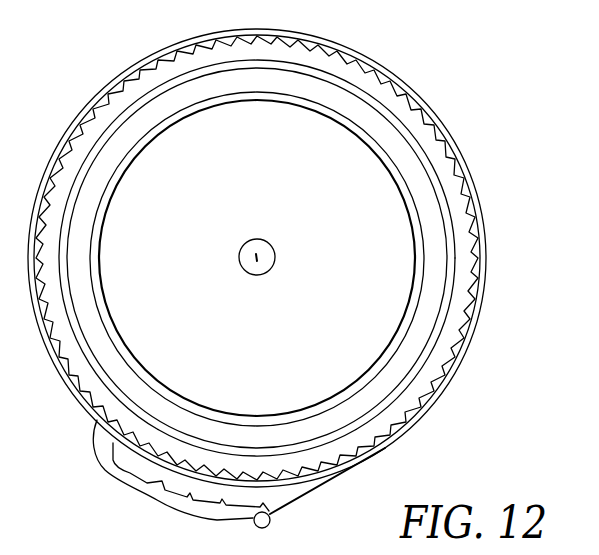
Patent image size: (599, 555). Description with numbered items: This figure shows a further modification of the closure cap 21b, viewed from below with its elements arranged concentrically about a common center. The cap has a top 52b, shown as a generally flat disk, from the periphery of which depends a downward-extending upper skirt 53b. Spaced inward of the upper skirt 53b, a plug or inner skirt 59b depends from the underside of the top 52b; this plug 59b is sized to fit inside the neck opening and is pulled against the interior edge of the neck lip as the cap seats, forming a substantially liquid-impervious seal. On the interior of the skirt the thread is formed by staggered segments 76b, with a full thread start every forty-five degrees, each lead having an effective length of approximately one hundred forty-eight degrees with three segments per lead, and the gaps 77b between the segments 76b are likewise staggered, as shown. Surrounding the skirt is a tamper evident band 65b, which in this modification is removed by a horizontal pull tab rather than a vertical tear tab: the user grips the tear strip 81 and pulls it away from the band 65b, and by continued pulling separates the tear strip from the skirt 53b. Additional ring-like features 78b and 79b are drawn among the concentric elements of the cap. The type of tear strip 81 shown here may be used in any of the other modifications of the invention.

The cap 21b is at (78, 99).
The top 52b is at (296, 174).
The upper skirt 53b is at (379, 97).
The plug 59b is at (333, 402).
The tamper evident band 65b is at (482, 238).
The segments 76b is at (450, 230).
The gaps 77b is at (440, 183).
The annular ring 78b is at (442, 330).
The annular ring 79b is at (333, 440).
The tear strip 81 is at (138, 485).